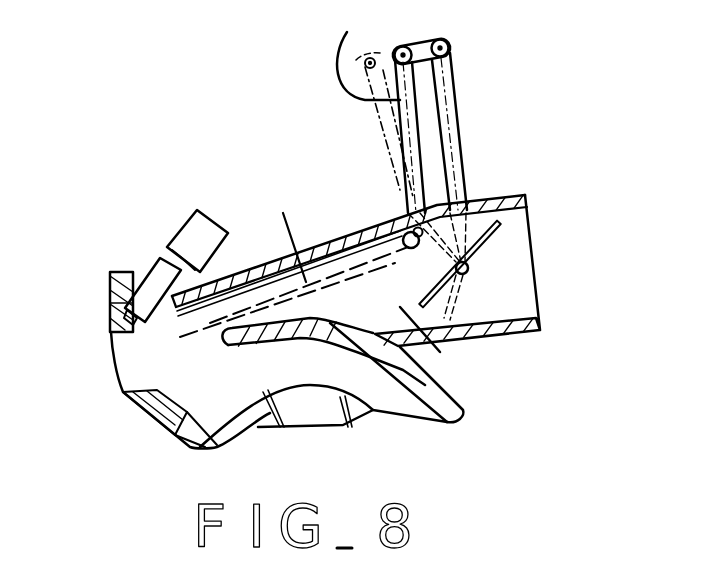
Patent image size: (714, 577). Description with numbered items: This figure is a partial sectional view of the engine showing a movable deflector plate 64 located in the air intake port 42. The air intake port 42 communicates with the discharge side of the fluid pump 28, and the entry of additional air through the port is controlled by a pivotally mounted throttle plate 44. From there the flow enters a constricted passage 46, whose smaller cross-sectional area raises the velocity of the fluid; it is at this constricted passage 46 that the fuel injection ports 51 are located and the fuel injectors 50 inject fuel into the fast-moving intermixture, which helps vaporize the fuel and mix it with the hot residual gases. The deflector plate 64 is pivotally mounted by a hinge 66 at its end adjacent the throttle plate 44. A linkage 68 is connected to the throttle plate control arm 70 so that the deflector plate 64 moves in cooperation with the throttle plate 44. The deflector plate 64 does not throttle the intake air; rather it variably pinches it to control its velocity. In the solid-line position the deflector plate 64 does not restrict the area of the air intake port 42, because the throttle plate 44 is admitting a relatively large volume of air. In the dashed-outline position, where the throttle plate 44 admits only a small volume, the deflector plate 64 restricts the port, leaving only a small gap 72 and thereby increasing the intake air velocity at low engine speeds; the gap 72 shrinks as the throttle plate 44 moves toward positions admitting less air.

The fluid pump 28 is at (320, 417).
The air intake port 42 is at (438, 350).
The throttle plate 44 is at (457, 300).
The constricted passage 46 is at (122, 362).
The fuel injector 50 is at (188, 232).
The fuel injection port 51 is at (125, 333).
The movable deflector plate 64 is at (287, 277).
The hinge 66 is at (410, 236).
The linkage 68 is at (418, 42).
The throttle plate control arm 70 is at (447, 98).
The gap 72 is at (250, 418).